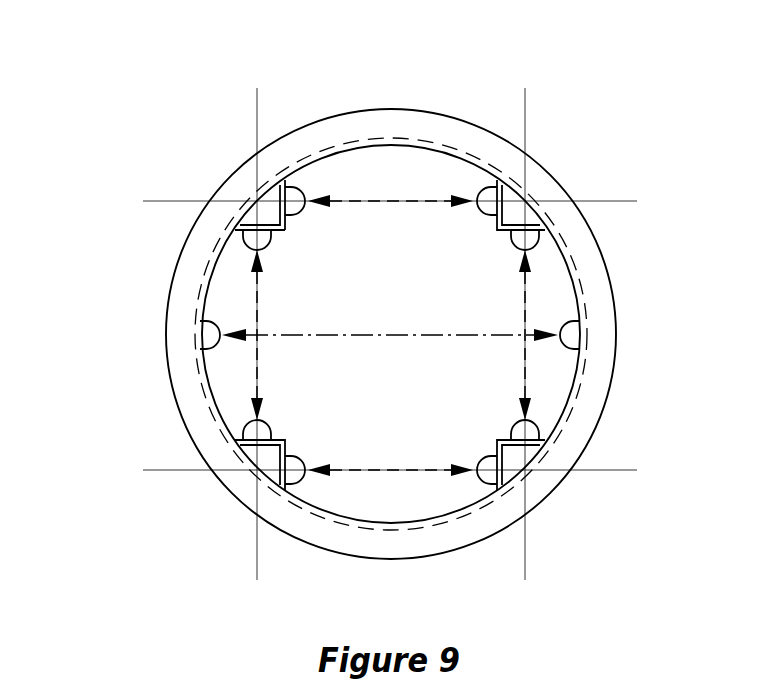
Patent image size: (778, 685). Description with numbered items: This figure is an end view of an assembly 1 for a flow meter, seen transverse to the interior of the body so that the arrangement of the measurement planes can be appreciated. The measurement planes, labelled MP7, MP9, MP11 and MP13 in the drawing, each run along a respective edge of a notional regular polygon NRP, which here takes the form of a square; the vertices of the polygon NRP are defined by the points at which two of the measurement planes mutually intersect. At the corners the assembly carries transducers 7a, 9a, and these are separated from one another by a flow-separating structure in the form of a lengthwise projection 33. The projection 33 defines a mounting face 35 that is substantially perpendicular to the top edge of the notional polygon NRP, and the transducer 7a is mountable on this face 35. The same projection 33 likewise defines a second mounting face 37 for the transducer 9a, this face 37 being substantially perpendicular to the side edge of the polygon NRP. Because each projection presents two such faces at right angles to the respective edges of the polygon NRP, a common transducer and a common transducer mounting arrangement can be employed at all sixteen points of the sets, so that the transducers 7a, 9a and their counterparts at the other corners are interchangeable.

The apparatus 1 is at (99, 61).
The transducer 7a is at (283, 183).
The transducer 9a is at (253, 247).
The lengthwise projection 33 is at (245, 228).
The mounting face 35 is at (311, 161).
The mounting face 37 is at (219, 249).
The notional regular polygon NRP is at (407, 201).
The measuring position 7 MP7 is at (620, 201).
The measuring position 9 MP9 is at (257, 103).
The measuring position 11 MP11 is at (622, 470).
The measuring position 13 MP13 is at (525, 105).